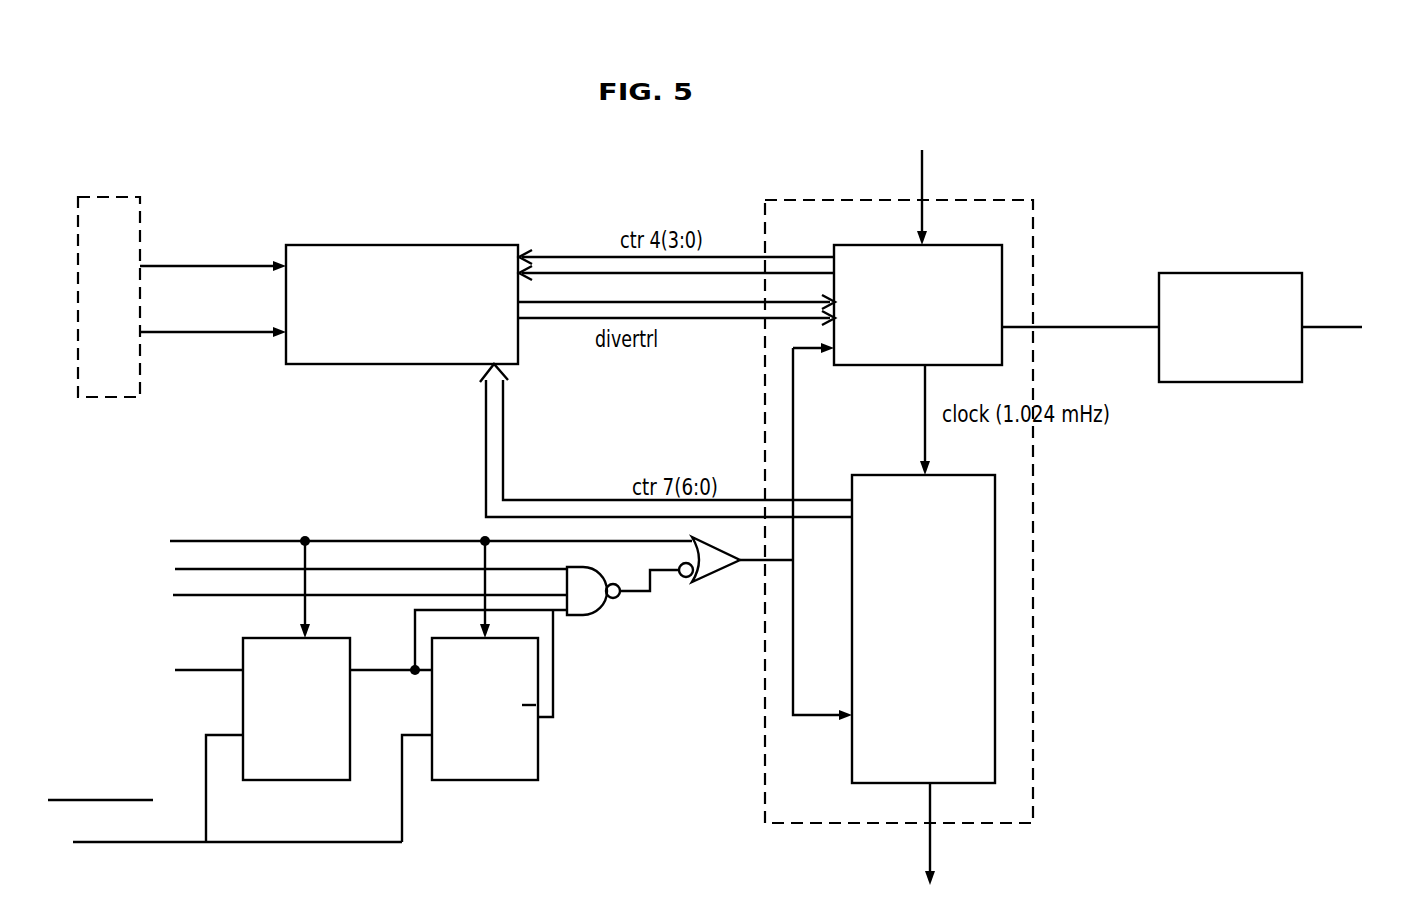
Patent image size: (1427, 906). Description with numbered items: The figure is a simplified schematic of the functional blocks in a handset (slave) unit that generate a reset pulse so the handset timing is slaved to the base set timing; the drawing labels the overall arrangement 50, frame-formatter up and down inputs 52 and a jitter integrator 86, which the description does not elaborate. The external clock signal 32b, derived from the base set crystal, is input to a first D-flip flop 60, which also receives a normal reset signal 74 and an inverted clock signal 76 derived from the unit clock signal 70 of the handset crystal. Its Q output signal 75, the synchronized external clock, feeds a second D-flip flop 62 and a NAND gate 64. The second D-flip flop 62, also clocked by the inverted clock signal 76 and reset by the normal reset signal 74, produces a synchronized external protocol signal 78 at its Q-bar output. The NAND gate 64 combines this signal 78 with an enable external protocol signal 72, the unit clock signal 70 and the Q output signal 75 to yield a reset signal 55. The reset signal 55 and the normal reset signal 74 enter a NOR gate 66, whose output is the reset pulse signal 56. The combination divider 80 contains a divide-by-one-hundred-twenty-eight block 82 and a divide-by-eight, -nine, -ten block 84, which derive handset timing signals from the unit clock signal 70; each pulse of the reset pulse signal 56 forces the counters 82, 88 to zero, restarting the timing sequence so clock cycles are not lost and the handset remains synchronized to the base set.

The clock synchronization circuit 50 is at (459, 143).
The frame formatter UP/DOWN signals 52 is at (237, 332).
The jitter integrator 86 is at (380, 245).
The unit clock signal 70 is at (920, 168).
The divide-by-8, -9, -10 block 84 is at (985, 245).
The counter 88 is at (1228, 273).
The divide-by-128 block 82 is at (995, 573).
The combination divider 80 is at (1033, 710).
The normal reset signal 74 is at (205, 541).
The enable external protocol signal 72 is at (175, 569).
The Q output signal 75 is at (377, 670).
The external clock signal 32b is at (222, 670).
The first D-flip flop 60 is at (243, 705).
The second D-flip flop 62 is at (538, 748).
The NAND gate 64 is at (593, 615).
The reset signal 55 is at (690, 583).
The NOR gate 66 is at (718, 572).
The reset pulse signal 56 is at (738, 568).
The synchronized external protocol signal 78 is at (553, 687).
The inverted clock signal 76 is at (127, 842).